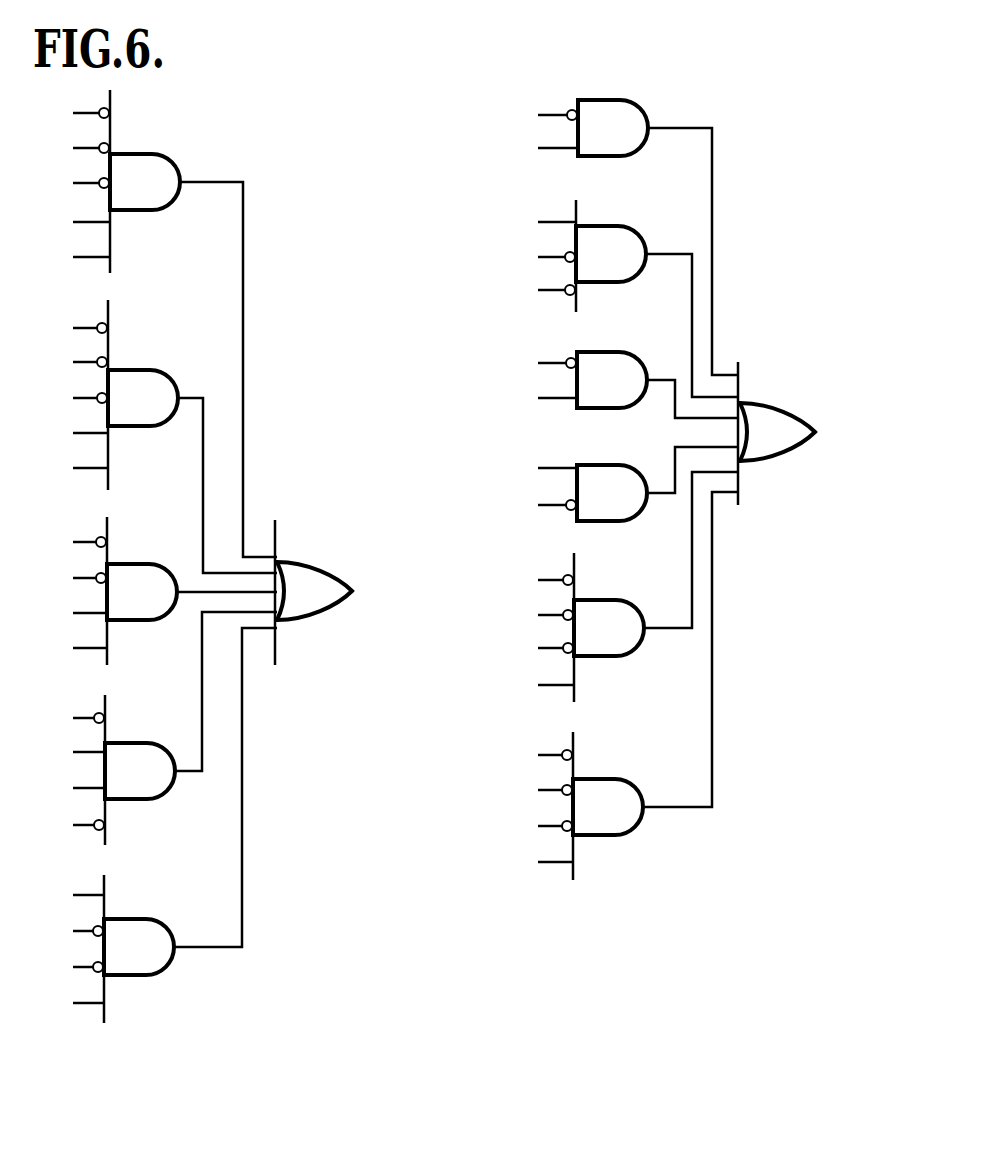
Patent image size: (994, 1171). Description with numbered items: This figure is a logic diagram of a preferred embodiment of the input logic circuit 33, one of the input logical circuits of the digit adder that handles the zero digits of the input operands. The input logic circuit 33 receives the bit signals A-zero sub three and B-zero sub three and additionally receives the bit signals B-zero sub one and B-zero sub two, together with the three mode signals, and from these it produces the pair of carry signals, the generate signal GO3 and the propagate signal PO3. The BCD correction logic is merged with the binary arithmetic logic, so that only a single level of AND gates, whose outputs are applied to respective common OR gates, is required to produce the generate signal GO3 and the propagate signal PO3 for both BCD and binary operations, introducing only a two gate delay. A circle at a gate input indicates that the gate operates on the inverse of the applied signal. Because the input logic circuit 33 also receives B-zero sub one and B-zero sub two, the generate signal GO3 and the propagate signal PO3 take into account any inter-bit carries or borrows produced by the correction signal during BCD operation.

The input logic circuit 33 is at (472, 625).
The generate signal G0_3 GO3 is at (352, 591).
The propagate signal P0_3 PO3 is at (815, 432).